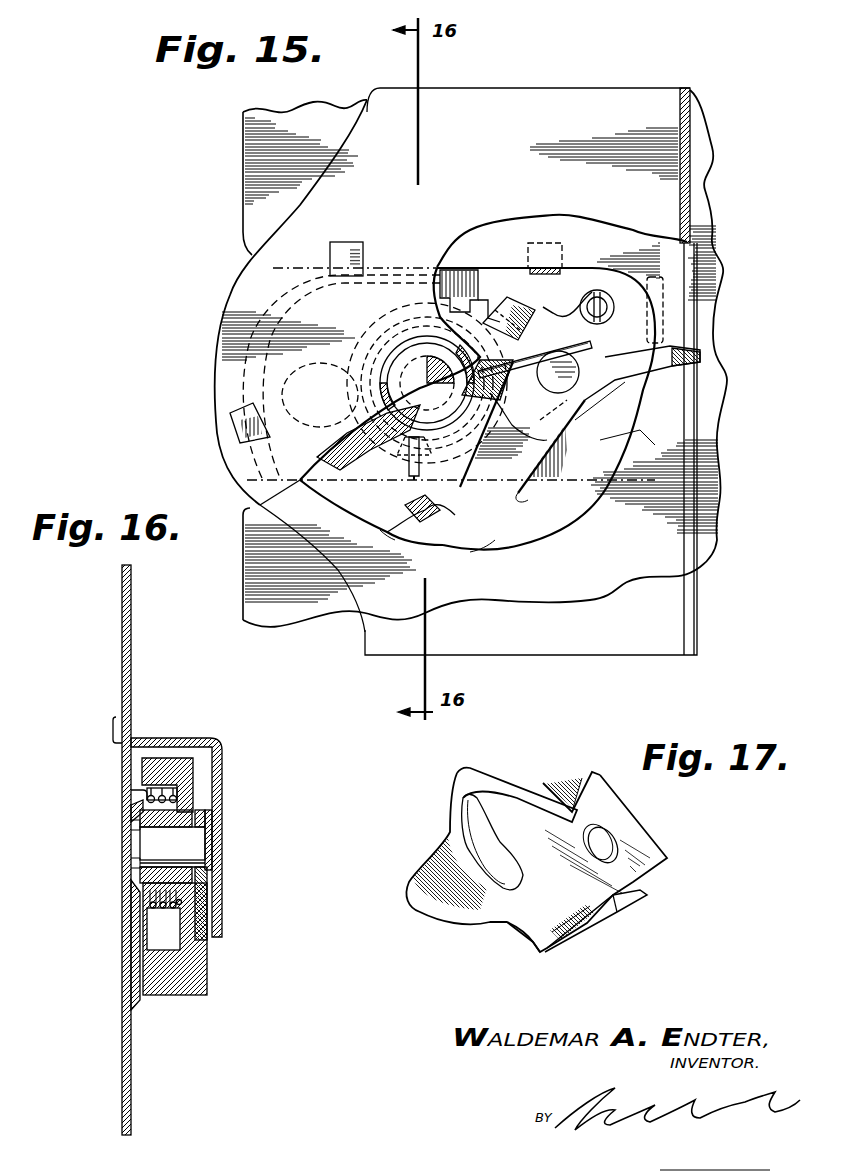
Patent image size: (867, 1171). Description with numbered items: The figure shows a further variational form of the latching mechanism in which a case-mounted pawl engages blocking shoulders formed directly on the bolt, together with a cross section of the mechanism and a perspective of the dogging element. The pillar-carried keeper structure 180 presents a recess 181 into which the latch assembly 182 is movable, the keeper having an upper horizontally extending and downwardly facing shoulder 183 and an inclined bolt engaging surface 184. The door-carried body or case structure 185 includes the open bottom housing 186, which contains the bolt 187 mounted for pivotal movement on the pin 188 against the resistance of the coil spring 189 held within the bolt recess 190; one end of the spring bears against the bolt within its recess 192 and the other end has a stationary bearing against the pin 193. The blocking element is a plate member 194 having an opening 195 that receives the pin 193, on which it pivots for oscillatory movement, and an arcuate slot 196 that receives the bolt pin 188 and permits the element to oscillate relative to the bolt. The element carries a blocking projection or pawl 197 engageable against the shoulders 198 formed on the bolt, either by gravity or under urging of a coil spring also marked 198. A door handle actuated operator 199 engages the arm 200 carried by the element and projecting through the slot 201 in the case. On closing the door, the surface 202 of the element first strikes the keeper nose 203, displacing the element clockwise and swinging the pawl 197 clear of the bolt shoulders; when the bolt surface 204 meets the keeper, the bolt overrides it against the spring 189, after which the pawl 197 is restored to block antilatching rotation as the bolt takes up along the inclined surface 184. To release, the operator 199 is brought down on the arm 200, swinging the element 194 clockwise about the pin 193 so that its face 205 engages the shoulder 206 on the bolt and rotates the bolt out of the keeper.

In FIG. 15, the keeper structure 180 is at (243, 598).
In FIG. 15, the recess 181 is at (498, 534).
In FIG. 15, the latch assembly 182 is at (210, 345).
In FIG. 16, the latch assembly 182 is at (212, 728).
In FIG. 15, the shoulder 183 is at (406, 268).
In FIG. 15, the inclined bolt engaging surface 184 is at (396, 530).
In FIG. 15, the body or case structure 185 is at (612, 96).
In FIG. 16, the body or case structure 185 is at (131, 690).
In FIG. 15, the open bottom housing 186 is at (470, 268).
In FIG. 16, the open bottom housing 186 is at (222, 772).
In FIG. 15, the bolt 187 is at (487, 420).
In FIG. 16, the bolt 187 is at (195, 806).
In FIG. 15, the pin 188 is at (440, 434).
In FIG. 16, the pin 188 is at (190, 846).
In FIG. 15, the coil spring 189 is at (487, 410).
In FIG. 16, the coil spring 189 is at (137, 802).
In FIG. 15, the bolt recess 190 is at (468, 412).
In FIG. 16, the bolt recess 190 is at (137, 790).
In FIG. 15, the recess 192 is at (405, 475).
In FIG. 16, the recess 192 is at (153, 930).
In FIG. 15, the pin 193 is at (585, 350).
In FIG. 15, the plate member 194 is at (552, 480).
In FIG. 16, the plate member 194 is at (215, 925).
In FIG. 17, the plate member 194 is at (525, 910).
In FIG. 15, the opening 195 is at (556, 392).
In FIG. 17, the opening 195 is at (612, 840).
In FIG. 15, the arcuate slot 196 is at (440, 465).
In FIG. 17, the arcuate slot 196 is at (487, 800).
In FIG. 15, the blocking projection or pawl 197 is at (508, 310).
In FIG. 17, the blocking projection or pawl 197 is at (563, 785).
In FIG. 15, the shoulders 198 is at (482, 274).
In FIG. 15, the door handle actuated operator 199 is at (665, 310).
In FIG. 15, the arm 200 is at (682, 366).
In FIG. 17, the arm 200 is at (622, 903).
In FIG. 15, the slot 201 is at (572, 434).
In FIG. 15, the surface 202 is at (527, 492).
In FIG. 17, the surface 202 is at (588, 935).
In FIG. 15, the keeper nose 203 is at (270, 488).
In FIG. 15, the surface 204 is at (440, 504).
In FIG. 15, the face 205 is at (330, 490).
In FIG. 17, the face 205 is at (425, 870).
In FIG. 15, the shoulder 206 is at (340, 415).